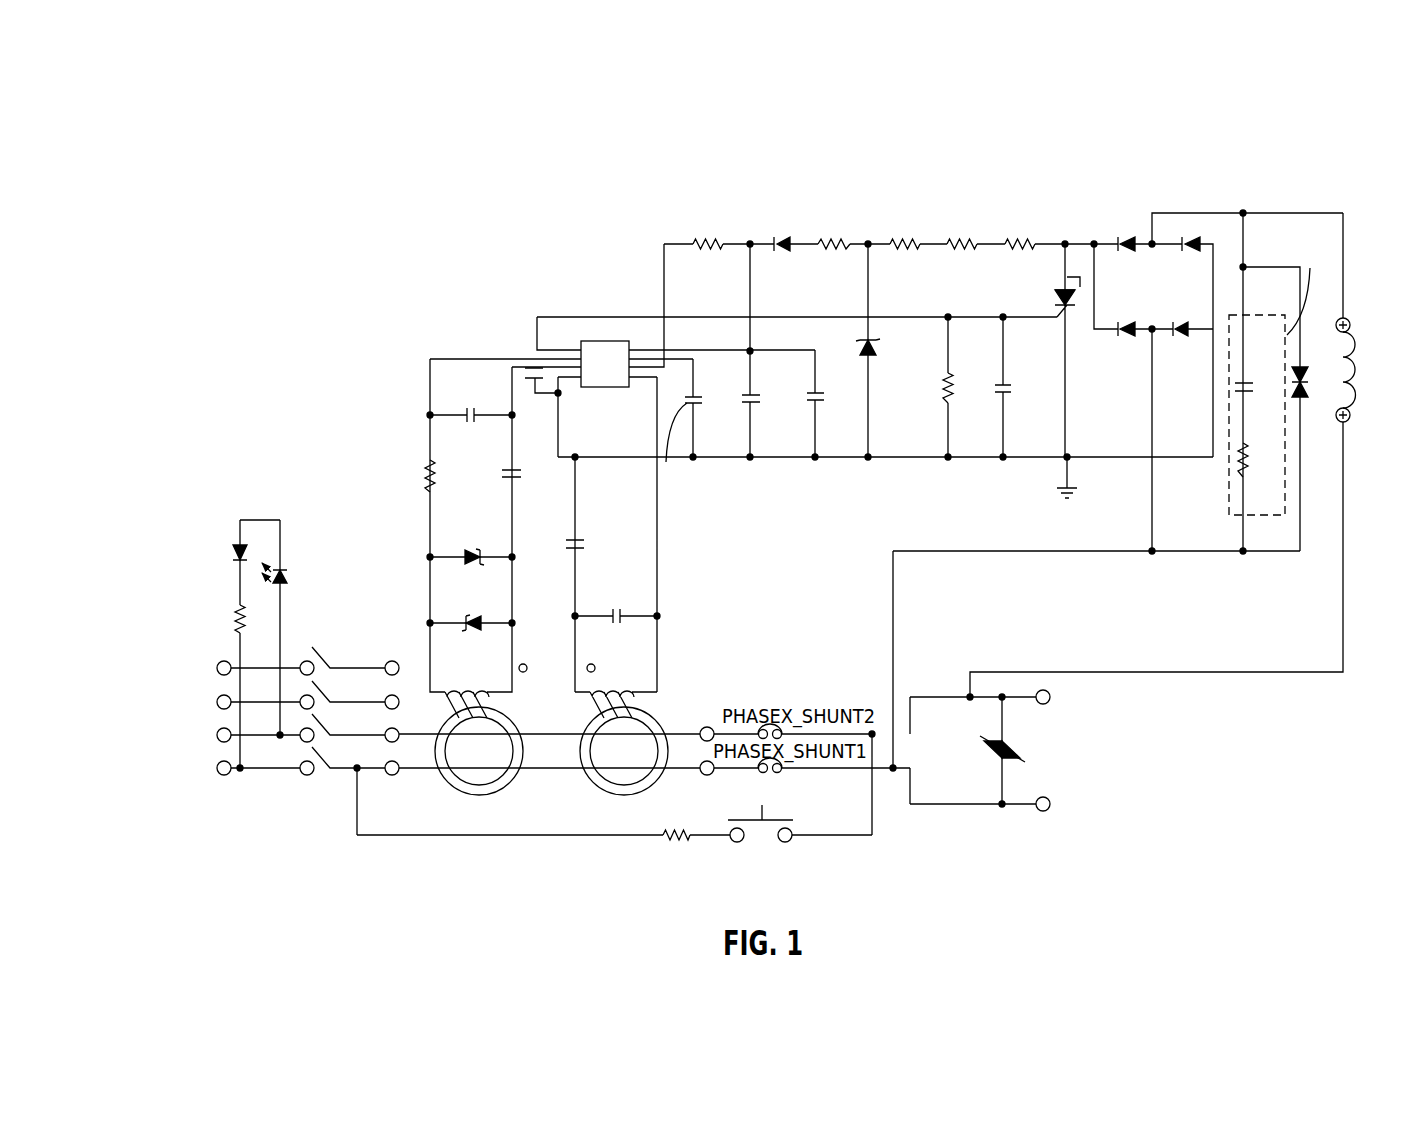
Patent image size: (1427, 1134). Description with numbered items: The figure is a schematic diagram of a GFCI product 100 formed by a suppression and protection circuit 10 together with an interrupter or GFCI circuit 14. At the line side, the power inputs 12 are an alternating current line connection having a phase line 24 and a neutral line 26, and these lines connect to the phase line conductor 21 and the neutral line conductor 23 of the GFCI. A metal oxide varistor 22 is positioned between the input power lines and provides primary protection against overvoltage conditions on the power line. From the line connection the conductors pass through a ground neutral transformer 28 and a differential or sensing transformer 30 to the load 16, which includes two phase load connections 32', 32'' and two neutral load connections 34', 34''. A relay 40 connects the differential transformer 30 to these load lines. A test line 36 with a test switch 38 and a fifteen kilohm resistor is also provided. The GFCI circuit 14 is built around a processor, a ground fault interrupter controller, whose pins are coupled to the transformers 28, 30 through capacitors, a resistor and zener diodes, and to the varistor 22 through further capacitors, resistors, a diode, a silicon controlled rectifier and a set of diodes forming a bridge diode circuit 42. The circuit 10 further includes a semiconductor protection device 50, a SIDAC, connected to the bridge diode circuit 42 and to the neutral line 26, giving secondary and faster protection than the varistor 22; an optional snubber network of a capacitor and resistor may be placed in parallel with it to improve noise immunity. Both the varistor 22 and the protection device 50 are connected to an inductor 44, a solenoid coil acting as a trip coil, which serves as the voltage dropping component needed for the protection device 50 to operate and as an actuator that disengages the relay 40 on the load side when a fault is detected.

The GFCI product 100 is at (616, 247).
The GFCI circuit 14 is at (465, 332).
The load 16 is at (344, 653).
The relay 40 is at (323, 542).
The bridge diode circuit 42 is at (1142, 242).
The inductor 44 is at (1362, 362).
The semiconductor protection device 50 is at (1312, 412).
The suppression and protection circuit 10 is at (1246, 580).
The phase line conductor 21 is at (1020, 695).
The phase line 24 is at (1052, 700).
The power inputs 12 is at (1092, 757).
The MOV 22 is at (1020, 770).
The neutral line 26 is at (1053, 807).
The neutral line conductor 23 is at (1018, 807).
The ground neutral transformer 28 is at (661, 705).
The differential transformer 30 is at (435, 786).
The phase load connection 32' is at (189, 664).
The neutral load connection 34' is at (221, 670).
The phase load connection 32'' is at (222, 747).
The neutral load connection 34'' is at (176, 790).
The test line 36 is at (830, 860).
The test switch 38 is at (750, 862).